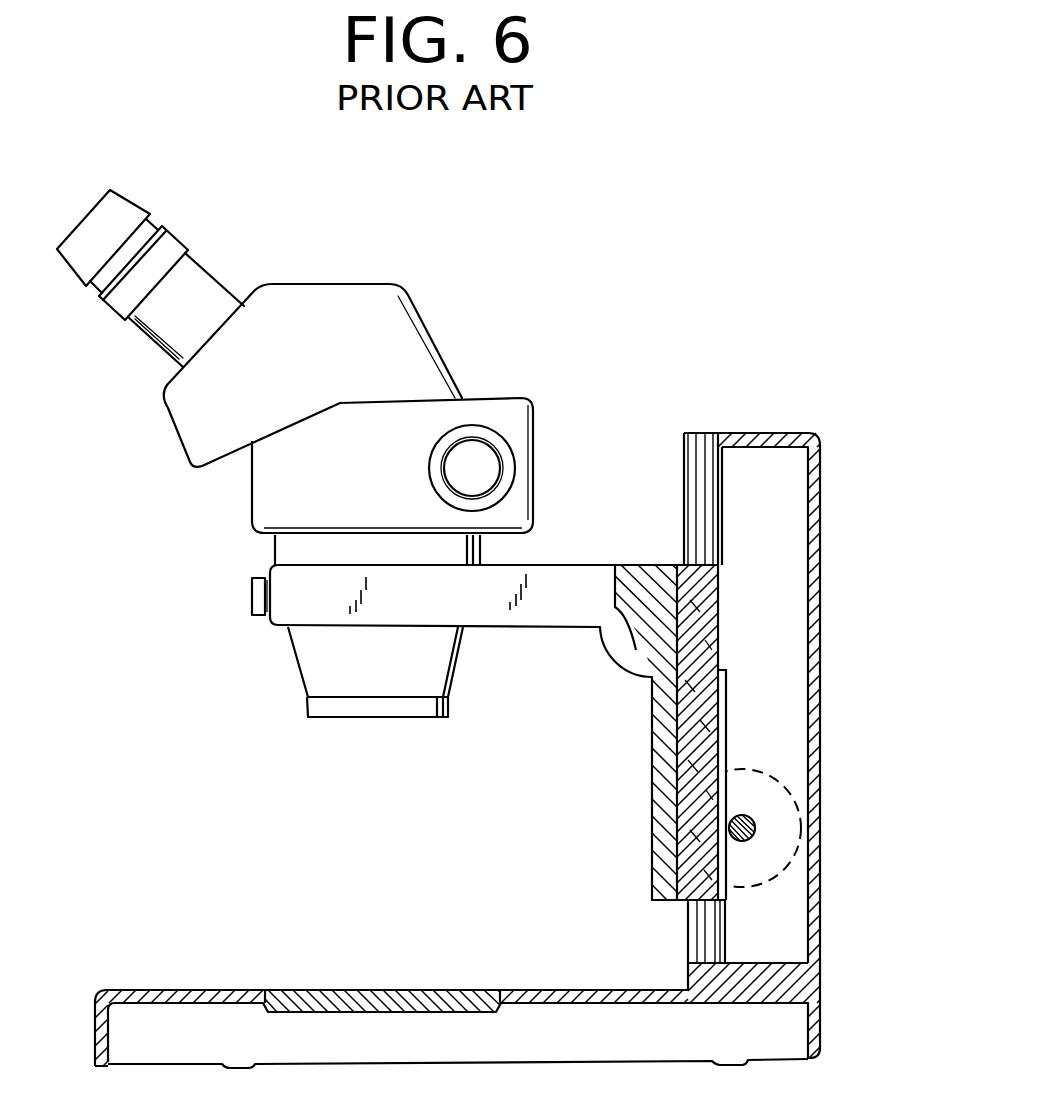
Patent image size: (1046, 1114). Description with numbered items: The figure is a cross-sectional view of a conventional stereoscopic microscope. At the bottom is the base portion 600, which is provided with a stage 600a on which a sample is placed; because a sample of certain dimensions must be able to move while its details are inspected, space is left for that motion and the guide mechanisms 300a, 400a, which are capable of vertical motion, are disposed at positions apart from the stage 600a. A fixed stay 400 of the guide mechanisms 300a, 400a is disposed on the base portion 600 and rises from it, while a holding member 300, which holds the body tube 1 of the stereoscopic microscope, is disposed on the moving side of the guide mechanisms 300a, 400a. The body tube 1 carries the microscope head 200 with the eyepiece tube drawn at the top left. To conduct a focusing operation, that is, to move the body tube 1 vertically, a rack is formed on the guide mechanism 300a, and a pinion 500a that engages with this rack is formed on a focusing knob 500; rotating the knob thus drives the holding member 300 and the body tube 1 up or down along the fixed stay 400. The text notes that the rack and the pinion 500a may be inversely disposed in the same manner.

The body tube 1 is at (265, 488).
The microscope head 200 is at (493, 413).
The holding member 300 is at (543, 607).
The guide mechanism 300a is at (678, 740).
The fixed stay 400 is at (752, 437).
The guide mechanism 400a is at (685, 468).
The focusing knob 500 is at (790, 782).
The pinion 500a is at (755, 823).
The base portion 600 is at (560, 985).
The stage 600a is at (380, 993).